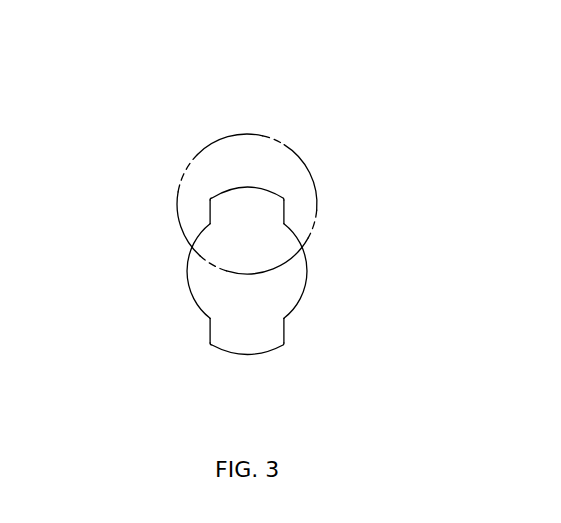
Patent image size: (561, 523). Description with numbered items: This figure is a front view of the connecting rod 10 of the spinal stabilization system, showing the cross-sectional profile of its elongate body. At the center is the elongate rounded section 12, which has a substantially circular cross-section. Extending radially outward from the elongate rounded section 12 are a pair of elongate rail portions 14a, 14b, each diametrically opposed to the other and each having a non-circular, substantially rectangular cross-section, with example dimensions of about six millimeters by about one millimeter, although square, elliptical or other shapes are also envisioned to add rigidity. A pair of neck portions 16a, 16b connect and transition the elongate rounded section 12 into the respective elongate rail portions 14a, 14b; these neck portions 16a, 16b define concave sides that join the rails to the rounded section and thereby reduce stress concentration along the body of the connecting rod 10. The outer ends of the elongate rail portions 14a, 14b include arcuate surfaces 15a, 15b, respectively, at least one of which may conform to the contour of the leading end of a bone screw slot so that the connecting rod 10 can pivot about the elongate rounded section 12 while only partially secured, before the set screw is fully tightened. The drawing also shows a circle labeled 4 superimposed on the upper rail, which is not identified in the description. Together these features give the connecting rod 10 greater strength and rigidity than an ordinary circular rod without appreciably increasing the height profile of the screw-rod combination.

The connecting rod 10 is at (353, 248).
The elongate rounded section 12 is at (207, 292).
The spherical head 4 is at (242, 135).
The elongate rail portion 14a is at (267, 202).
The elongate rail portion 14b is at (248, 342).
The arcuate surface 15a is at (240, 187).
The arcuate surface 15b is at (273, 350).
The neck portion 16a is at (210, 210).
The neck portion 16b is at (286, 330).